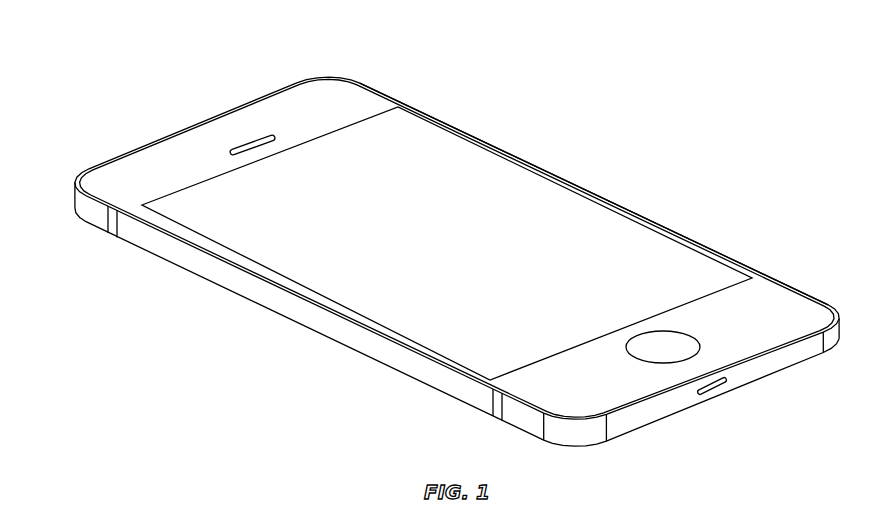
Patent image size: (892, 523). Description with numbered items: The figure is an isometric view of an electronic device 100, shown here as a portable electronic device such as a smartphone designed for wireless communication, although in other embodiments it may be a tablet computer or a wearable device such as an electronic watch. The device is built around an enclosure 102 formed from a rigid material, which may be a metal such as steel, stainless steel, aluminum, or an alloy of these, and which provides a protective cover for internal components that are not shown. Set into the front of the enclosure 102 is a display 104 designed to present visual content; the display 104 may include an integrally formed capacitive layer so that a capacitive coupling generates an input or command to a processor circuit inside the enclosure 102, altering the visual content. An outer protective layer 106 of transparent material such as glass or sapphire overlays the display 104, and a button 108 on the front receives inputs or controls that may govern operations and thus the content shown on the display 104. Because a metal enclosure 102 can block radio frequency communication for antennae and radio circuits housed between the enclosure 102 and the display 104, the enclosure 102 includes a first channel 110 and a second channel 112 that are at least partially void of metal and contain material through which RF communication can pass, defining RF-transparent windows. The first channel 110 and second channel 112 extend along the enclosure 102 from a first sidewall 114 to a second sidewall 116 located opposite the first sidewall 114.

The electronic device 100 is at (439, 238).
The enclosure 102 is at (693, 426).
The display 104 is at (442, 252).
The outer protective layer 106 is at (318, 103).
The button 108 is at (702, 347).
The first channel 110 is at (104, 244).
The second channel 112 is at (475, 421).
The first sidewall 114 is at (241, 276).
The second sidewall 116 is at (601, 196).